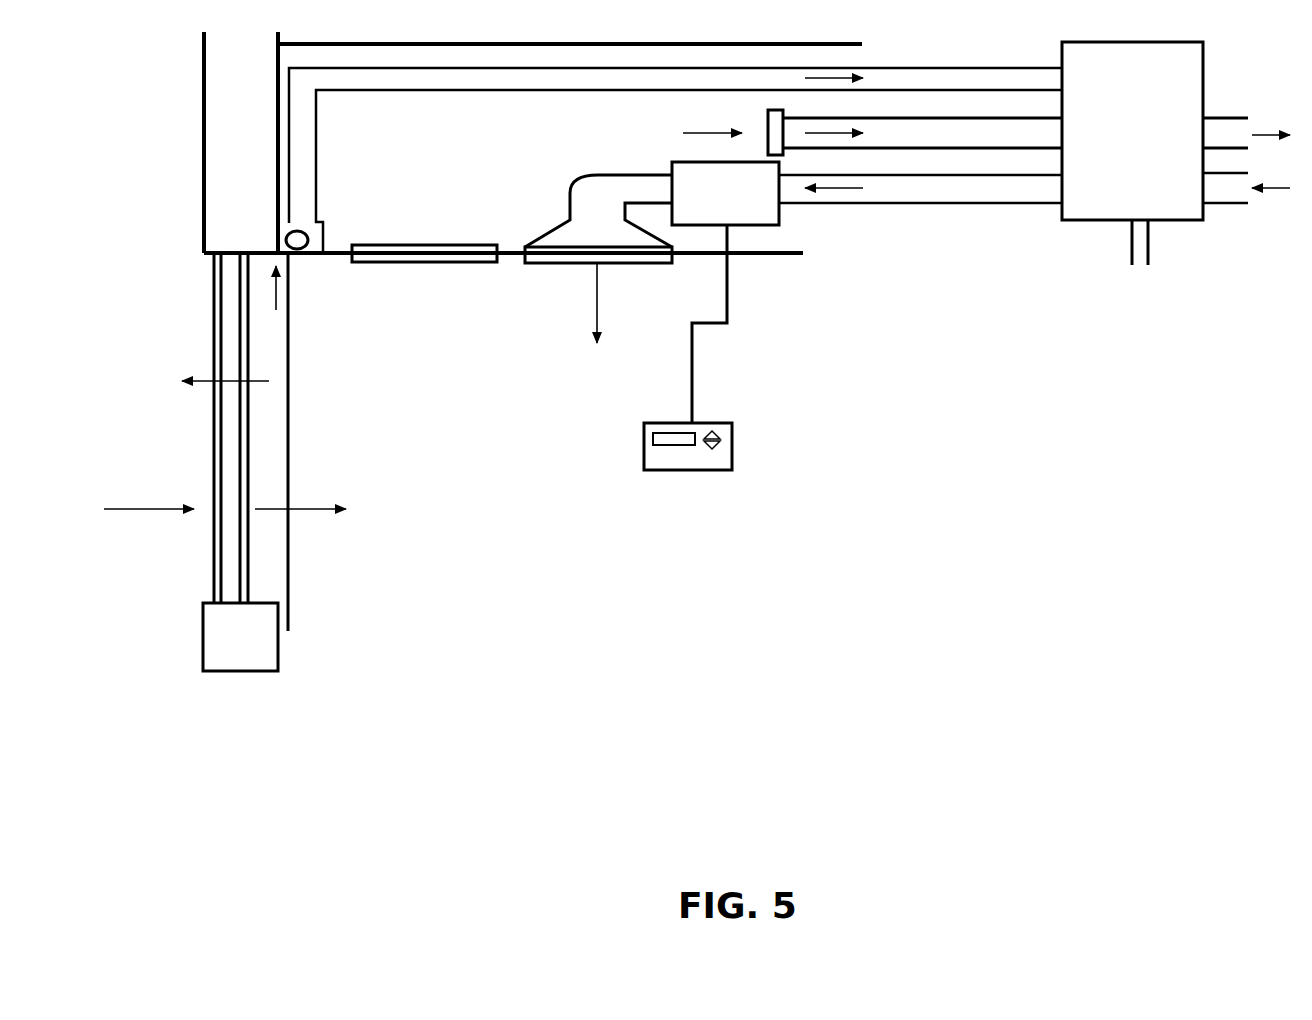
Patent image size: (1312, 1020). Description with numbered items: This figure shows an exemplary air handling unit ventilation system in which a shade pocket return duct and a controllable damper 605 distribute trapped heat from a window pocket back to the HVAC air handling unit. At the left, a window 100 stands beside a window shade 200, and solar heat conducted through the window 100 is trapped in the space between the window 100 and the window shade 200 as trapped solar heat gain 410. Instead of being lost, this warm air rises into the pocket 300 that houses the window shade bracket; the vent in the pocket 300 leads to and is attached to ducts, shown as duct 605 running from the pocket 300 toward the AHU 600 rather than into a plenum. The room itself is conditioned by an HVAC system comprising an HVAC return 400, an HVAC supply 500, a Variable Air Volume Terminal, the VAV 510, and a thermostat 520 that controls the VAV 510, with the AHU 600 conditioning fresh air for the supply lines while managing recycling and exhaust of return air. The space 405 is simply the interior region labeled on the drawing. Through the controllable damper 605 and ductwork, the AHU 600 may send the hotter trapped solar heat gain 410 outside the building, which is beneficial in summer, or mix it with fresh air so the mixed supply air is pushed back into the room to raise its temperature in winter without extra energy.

The window 100 is at (177, 284).
The window shade 200 is at (292, 369).
The pocket 300 is at (330, 225).
The HVAC return 400 is at (423, 264).
The interior space 405 is at (414, 184).
The trapped solar heat gain 410 is at (530, 217).
The HVAC supply 500 is at (565, 188).
The Variable Air Volume Terminal (VAV) 510 is at (787, 227).
The thermostat 520 is at (718, 421).
The air handling unit (AHU) 600 is at (1050, 38).
The controllable damper 605 is at (293, 142).